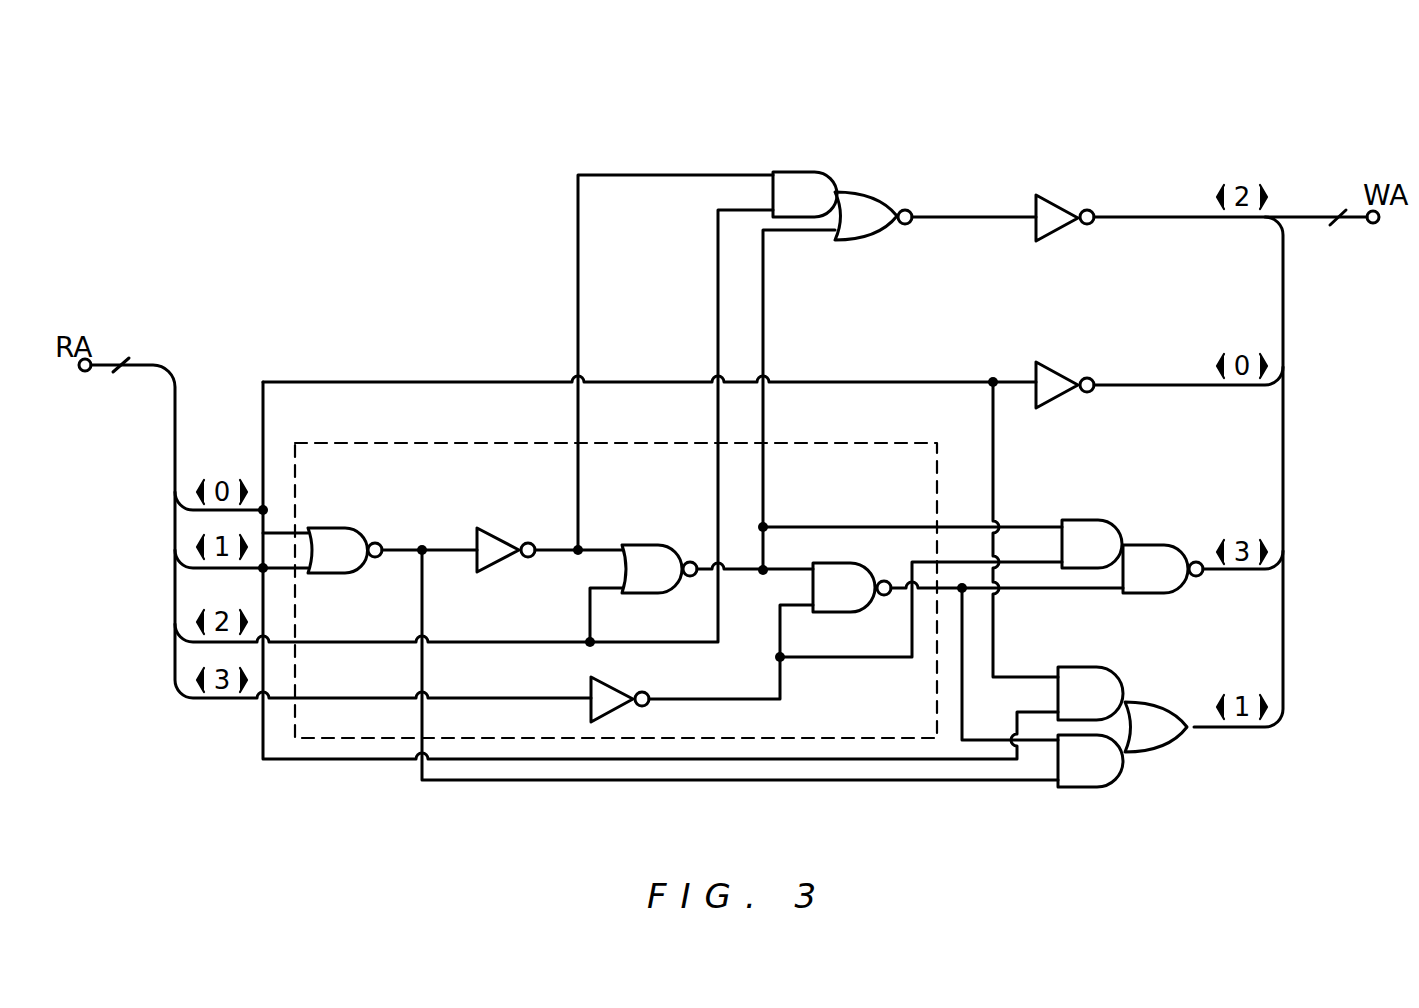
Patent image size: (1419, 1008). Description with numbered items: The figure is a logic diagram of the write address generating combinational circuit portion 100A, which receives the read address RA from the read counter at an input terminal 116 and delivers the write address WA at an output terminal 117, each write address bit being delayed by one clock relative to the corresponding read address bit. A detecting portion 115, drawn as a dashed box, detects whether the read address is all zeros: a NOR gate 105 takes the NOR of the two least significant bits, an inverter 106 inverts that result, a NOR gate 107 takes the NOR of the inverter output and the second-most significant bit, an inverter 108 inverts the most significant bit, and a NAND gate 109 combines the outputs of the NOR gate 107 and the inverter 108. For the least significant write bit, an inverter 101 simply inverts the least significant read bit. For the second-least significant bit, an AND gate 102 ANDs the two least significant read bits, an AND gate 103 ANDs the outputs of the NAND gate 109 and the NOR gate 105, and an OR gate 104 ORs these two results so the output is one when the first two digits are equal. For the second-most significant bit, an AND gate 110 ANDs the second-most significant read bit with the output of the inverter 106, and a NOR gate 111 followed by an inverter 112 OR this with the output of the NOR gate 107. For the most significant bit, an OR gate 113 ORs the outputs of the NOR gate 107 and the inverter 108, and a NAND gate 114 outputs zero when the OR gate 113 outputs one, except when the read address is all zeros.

The write address generating combinational circuit portion 100A is at (280, 103).
The inverter 101 is at (1050, 370).
The AND gate 102 is at (1092, 677).
The AND gate 103 is at (1088, 775).
The OR gate 104 is at (1162, 715).
The NOR gate 105 is at (337, 533).
The inverter 106 is at (493, 547).
The NOR gate 107 is at (648, 550).
The inverter 108 is at (617, 698).
The NAND gate 109 is at (847, 583).
The AND gate 110 is at (798, 175).
The NOR gate 111 is at (872, 200).
The inverter 112 is at (1055, 213).
The OR gate 113 is at (1085, 530).
The NAND gate 114 is at (1160, 553).
The detecting portion 115 is at (845, 443).
The input terminal 116 is at (90, 372).
The output terminal 117 is at (1371, 225).